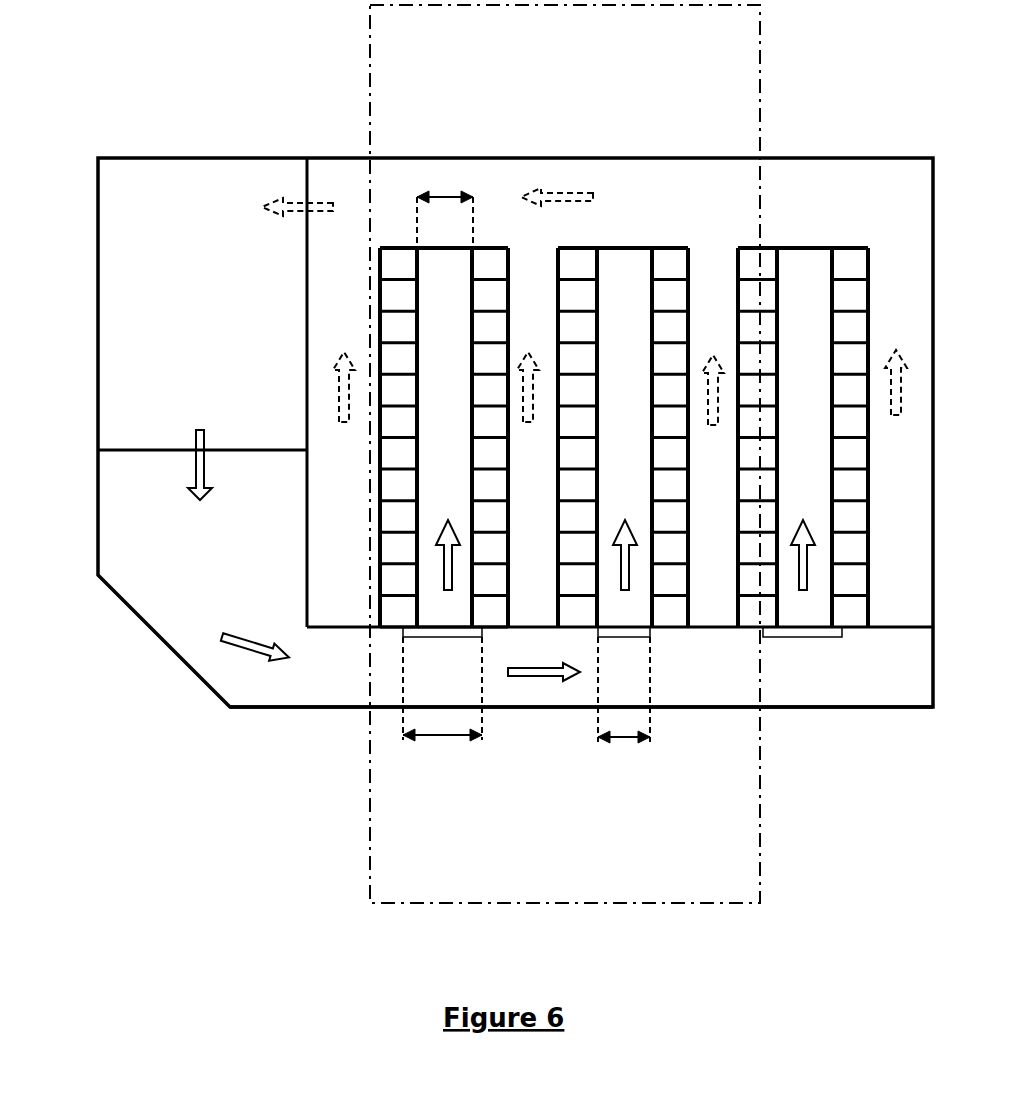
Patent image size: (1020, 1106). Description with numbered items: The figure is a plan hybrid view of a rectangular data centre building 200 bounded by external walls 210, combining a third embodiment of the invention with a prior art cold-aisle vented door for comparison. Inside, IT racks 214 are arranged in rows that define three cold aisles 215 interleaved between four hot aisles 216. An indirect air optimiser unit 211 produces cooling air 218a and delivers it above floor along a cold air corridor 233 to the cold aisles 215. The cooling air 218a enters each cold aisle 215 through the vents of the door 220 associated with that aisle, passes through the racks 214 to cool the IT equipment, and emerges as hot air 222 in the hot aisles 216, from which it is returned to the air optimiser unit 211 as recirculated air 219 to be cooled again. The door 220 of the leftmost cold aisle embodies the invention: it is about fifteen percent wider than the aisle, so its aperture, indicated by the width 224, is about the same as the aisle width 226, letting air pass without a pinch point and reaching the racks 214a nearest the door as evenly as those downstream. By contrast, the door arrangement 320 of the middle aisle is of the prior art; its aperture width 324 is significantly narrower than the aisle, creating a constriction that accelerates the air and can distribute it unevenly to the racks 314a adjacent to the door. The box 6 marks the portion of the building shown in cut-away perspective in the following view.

The data centre building 200 is at (170, 110).
The box 6 is at (768, 42).
The external walls 210 is at (815, 158).
The indirect air optimiser unit 211 is at (186, 426).
The IT racks 214 is at (671, 258).
The racks in the immediate vicinity of the door 214a is at (393, 620).
The cold aisles 215 is at (629, 502).
The hot aisles 216 is at (623, 427).
The cooling air 218a is at (243, 656).
The recirculated air 219 is at (285, 220).
The door 220 is at (455, 645).
The hot air 222 is at (545, 186).
The inlet opening width 224 is at (440, 742).
The channel width 226 is at (433, 192).
The cold air corridor 233 is at (326, 689).
The racks in the immediate vicinity of the prior art door 314a is at (583, 618).
The door arrangement of the prior art 320 is at (645, 633).
The second inlet opening width 324 is at (623, 745).